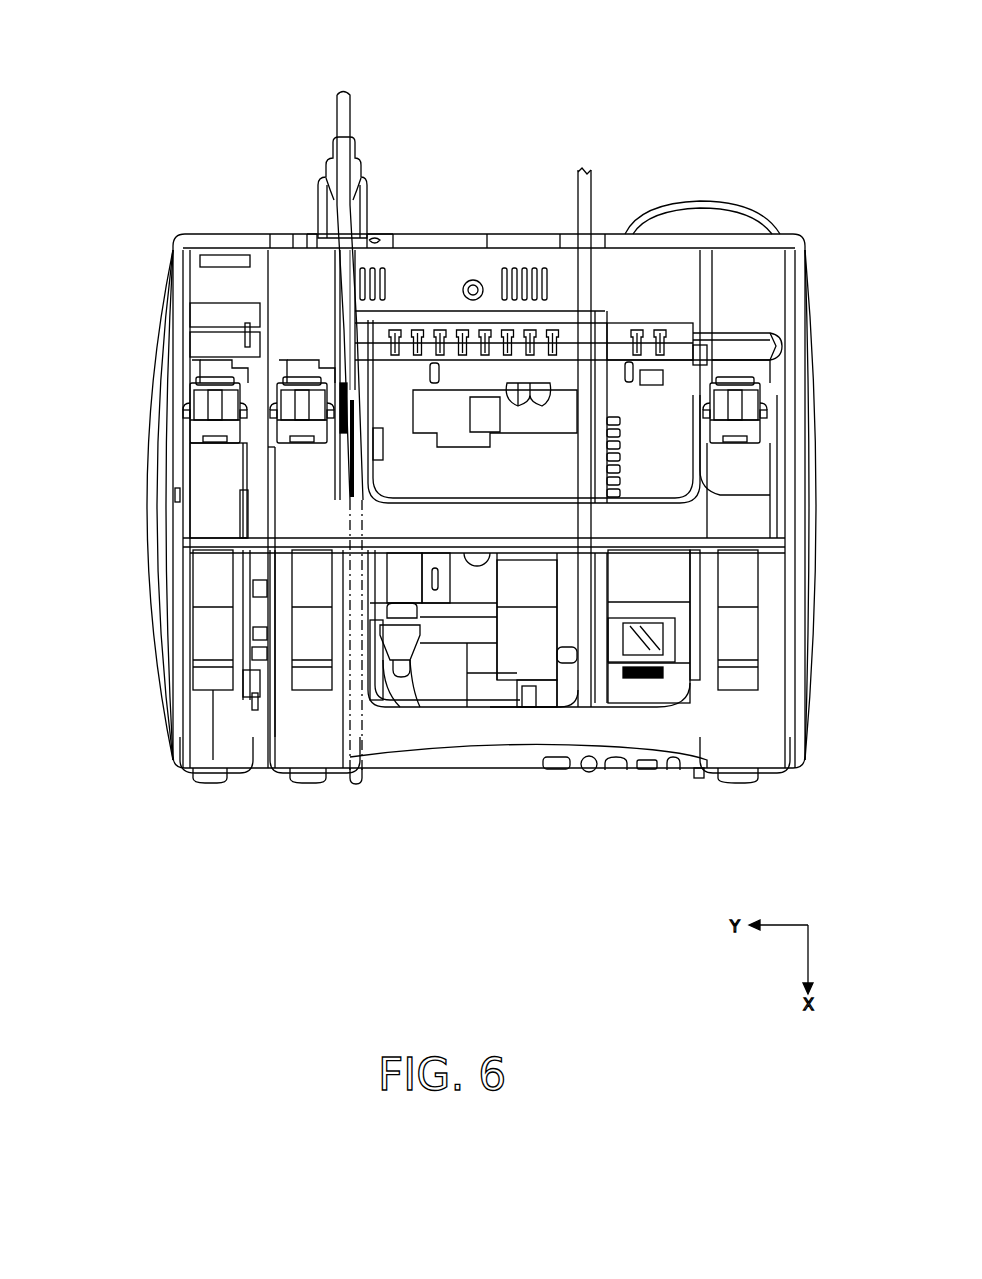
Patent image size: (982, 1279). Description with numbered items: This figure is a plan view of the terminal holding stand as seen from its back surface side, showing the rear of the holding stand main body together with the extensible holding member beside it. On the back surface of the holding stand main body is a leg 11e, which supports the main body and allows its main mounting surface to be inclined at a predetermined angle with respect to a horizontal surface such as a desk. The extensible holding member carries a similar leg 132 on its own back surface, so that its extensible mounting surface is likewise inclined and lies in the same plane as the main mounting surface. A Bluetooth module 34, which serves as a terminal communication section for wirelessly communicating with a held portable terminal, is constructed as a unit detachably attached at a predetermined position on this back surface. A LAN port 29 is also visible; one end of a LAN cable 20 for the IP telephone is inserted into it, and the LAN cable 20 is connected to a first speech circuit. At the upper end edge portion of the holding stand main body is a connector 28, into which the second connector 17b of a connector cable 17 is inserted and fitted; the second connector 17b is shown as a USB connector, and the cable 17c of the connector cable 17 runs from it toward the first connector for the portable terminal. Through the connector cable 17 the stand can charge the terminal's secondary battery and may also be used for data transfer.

The connector cable 17 is at (365, 410).
The second connector 17b is at (324, 175).
The cable 17c is at (361, 178).
The connector 28 is at (328, 244).
The LAN cable 20 is at (585, 232).
The Bluetooth module 34 is at (483, 487).
The leg 132 is at (222, 507).
The leg 11e is at (720, 515).
The LAN port 29 is at (401, 595).